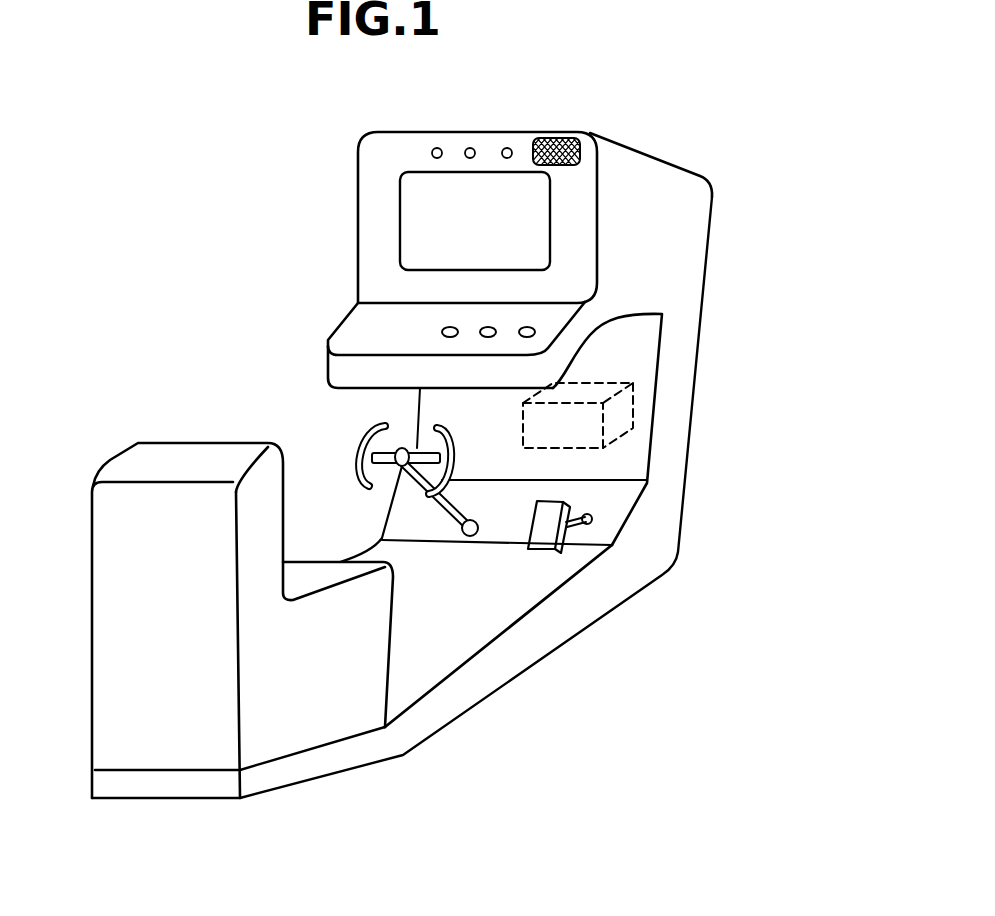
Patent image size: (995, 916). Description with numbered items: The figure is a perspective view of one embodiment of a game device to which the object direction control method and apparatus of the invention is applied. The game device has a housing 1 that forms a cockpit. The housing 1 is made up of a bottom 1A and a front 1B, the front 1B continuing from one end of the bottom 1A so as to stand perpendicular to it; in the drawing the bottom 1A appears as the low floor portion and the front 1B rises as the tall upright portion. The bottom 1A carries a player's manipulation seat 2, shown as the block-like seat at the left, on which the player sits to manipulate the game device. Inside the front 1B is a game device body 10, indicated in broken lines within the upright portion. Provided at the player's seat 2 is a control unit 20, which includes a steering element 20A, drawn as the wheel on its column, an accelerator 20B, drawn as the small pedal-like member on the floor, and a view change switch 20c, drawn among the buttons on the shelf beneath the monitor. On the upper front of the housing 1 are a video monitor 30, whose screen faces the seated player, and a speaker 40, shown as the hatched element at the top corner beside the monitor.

The housing 1 is at (694, 553).
The bottom 1A is at (605, 610).
The front 1B is at (677, 413).
The player's manipulation seat 2 is at (318, 444).
The game device body 10 is at (626, 413).
The control unit 20 is at (377, 403).
The steering element 20A is at (386, 474).
The accelerator 20B is at (540, 538).
The view change switch 20c is at (443, 328).
The video monitor 30 is at (407, 203).
The speaker 40 is at (566, 138).